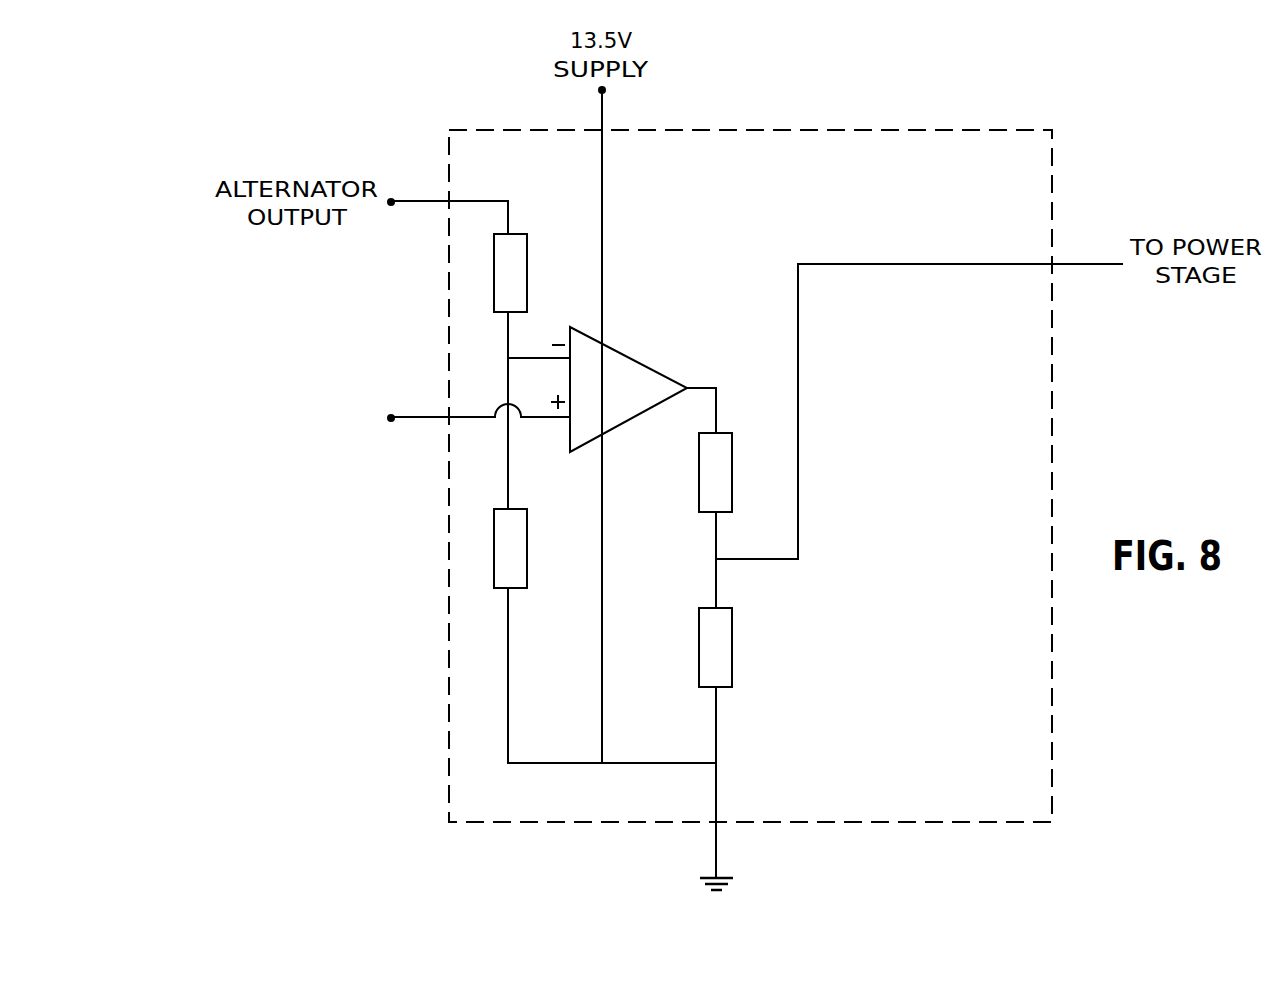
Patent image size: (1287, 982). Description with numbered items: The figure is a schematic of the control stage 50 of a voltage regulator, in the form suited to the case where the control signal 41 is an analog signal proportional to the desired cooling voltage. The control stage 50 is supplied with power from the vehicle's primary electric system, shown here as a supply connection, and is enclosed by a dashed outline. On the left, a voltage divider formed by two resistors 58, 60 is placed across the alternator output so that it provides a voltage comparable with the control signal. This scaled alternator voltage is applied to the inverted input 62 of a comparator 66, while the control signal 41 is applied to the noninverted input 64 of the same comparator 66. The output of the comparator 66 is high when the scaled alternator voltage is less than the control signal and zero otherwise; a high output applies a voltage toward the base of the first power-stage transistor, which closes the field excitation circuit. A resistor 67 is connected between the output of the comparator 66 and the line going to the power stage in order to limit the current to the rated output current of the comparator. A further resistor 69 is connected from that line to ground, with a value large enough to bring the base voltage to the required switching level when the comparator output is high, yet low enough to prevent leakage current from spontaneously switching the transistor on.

The control stage 50 is at (404, 85).
The control signal 41 is at (412, 413).
The resistor 58 is at (527, 265).
The resistor 60 is at (527, 540).
The inverted input 62 is at (585, 336).
The noninverted input 64 is at (569, 421).
The comparator 66 is at (668, 387).
The resistor 67 is at (732, 464).
The resistor 69 is at (732, 640).